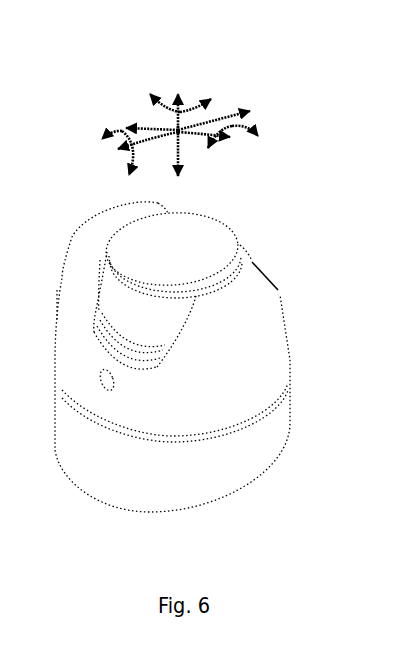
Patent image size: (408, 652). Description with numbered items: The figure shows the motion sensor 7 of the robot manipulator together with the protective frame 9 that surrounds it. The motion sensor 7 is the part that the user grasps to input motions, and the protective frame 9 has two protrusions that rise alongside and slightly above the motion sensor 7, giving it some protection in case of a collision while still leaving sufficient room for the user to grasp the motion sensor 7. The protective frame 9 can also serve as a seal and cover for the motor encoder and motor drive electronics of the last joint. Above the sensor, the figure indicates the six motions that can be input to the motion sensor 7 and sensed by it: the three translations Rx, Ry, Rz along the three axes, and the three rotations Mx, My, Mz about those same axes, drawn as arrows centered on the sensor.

The protective frame 9 is at (76, 222).
The motion sensor 7 is at (250, 235).
The translation Rx is at (168, 122).
The translation Ry is at (198, 105).
The translation Rz is at (185, 118).
The rotation Mx is at (257, 147).
The rotation My is at (104, 146).
The rotation Mz is at (165, 88).